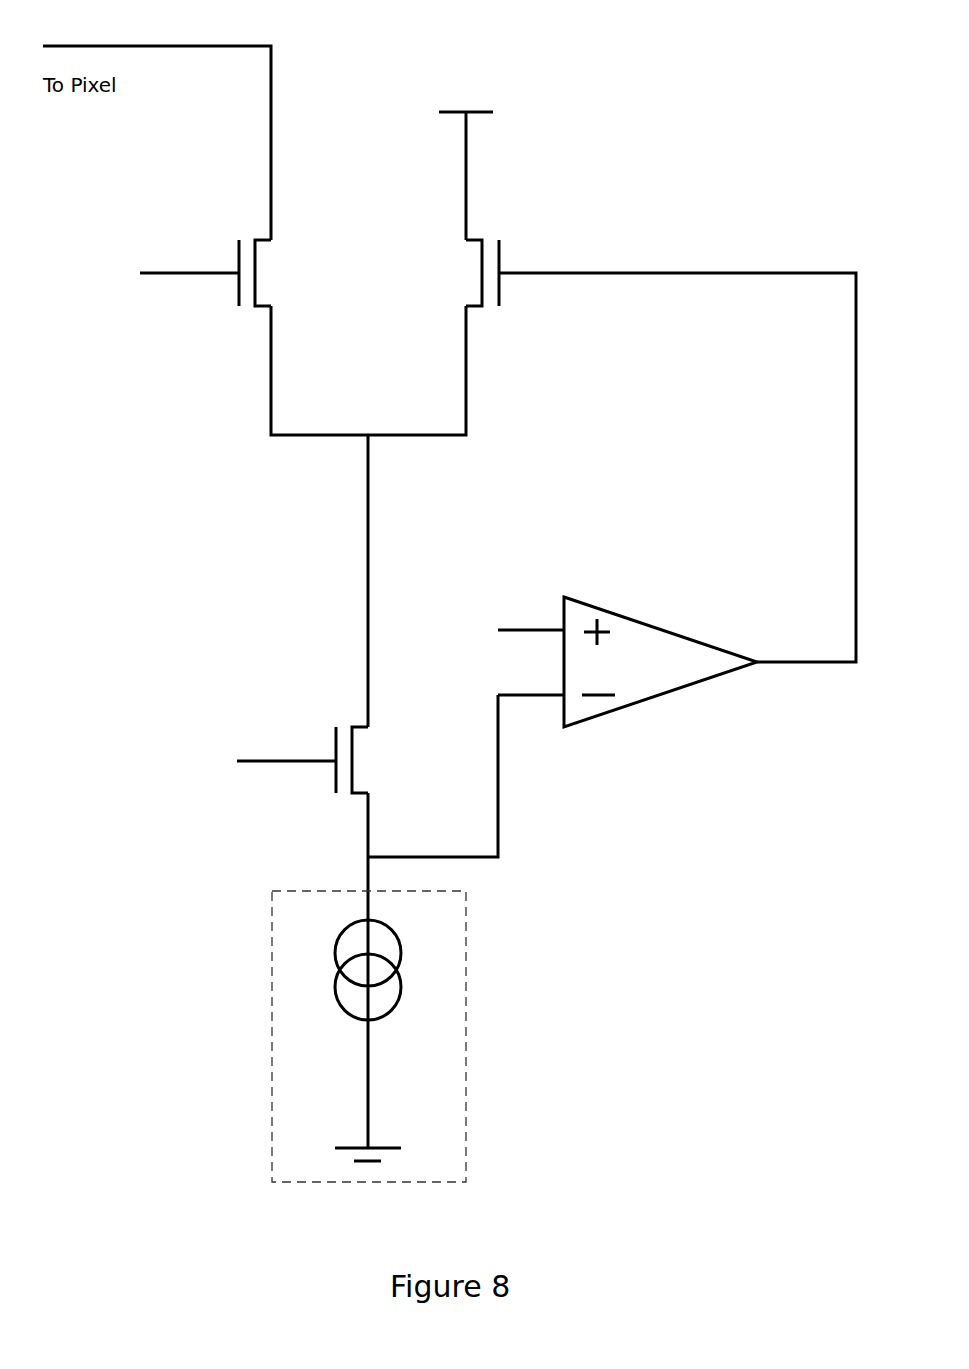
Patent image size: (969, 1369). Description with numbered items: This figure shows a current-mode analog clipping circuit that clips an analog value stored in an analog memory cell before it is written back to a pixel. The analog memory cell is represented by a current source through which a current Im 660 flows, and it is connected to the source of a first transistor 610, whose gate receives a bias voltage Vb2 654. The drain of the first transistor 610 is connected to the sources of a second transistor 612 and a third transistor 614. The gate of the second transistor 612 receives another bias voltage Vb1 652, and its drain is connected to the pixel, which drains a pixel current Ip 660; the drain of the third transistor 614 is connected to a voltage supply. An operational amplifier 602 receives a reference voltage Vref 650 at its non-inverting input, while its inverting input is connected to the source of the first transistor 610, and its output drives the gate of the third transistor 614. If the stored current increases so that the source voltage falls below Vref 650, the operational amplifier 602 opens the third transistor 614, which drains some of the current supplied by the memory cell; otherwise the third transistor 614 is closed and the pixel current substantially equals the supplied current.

The current 660 is at (245, 582).
The bias voltage Vb1 652 is at (179, 258).
The second transistor 612 is at (275, 273).
The third transistor 614 is at (468, 273).
The bias voltage Vb2 654 is at (271, 747).
The first transistor 610 is at (367, 760).
The reference voltage Vref 650 is at (498, 616).
The operational amplifier 602 is at (627, 662).